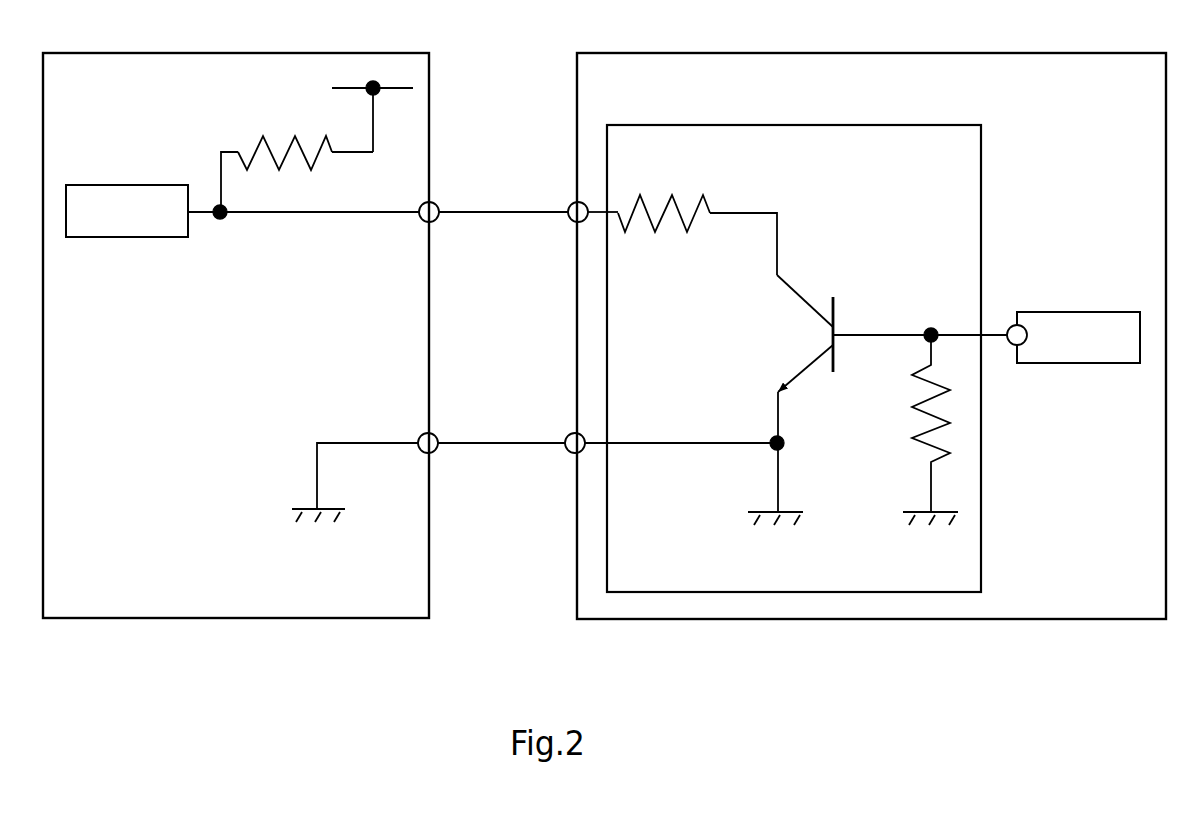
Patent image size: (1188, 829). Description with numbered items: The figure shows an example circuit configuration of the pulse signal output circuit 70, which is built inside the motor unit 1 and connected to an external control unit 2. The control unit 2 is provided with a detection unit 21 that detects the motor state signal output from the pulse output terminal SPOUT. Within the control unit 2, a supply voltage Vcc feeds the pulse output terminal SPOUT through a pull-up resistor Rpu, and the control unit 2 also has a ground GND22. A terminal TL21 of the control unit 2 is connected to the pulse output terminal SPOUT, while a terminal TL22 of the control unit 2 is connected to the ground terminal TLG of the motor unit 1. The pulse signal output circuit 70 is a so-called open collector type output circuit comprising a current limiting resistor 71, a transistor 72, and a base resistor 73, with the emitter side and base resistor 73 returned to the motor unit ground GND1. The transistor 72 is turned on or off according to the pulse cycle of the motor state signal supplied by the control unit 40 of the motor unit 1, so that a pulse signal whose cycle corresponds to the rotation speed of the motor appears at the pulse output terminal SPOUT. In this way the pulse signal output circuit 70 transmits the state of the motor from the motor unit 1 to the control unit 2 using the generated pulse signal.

The motor unit 1 is at (927, 53).
The control unit 2 is at (232, 52).
The detection unit 21 is at (128, 238).
The control unit 40 is at (1080, 308).
The pulse signal output circuit 70 is at (797, 123).
The current limiting resistor 71 is at (657, 195).
The transistor 72 is at (810, 277).
The base resistor 73 is at (908, 423).
The pull-up resistor Rpu is at (248, 143).
The supply voltage Vcc is at (337, 87).
The pulse output terminal SPOUT is at (568, 198).
The terminal TL21 is at (440, 223).
The terminal TL22 is at (442, 452).
The ground terminal TLG is at (568, 430).
The ground of sensor device GND22 is at (285, 520).
The ground of control device GND1 is at (745, 522).